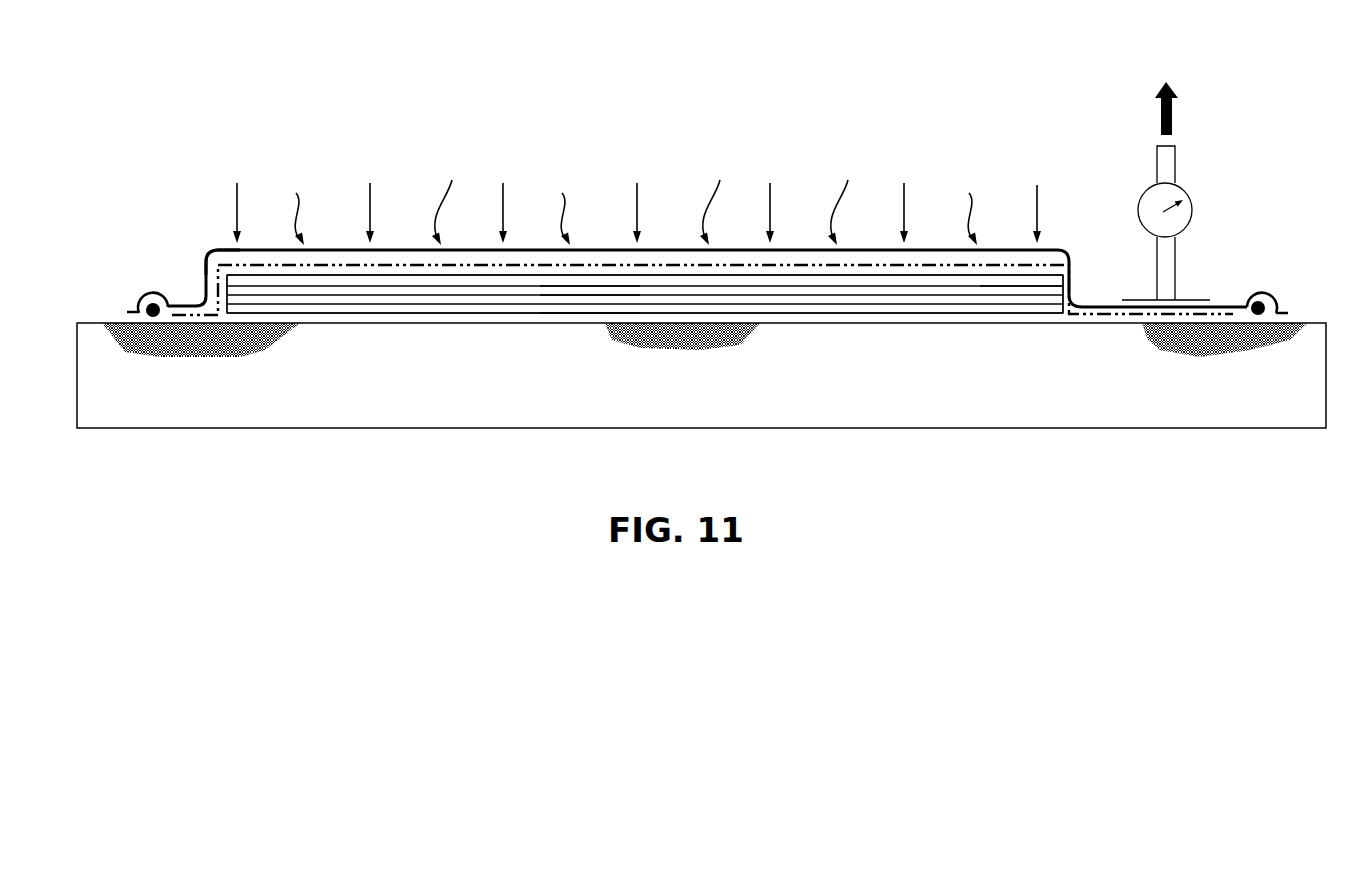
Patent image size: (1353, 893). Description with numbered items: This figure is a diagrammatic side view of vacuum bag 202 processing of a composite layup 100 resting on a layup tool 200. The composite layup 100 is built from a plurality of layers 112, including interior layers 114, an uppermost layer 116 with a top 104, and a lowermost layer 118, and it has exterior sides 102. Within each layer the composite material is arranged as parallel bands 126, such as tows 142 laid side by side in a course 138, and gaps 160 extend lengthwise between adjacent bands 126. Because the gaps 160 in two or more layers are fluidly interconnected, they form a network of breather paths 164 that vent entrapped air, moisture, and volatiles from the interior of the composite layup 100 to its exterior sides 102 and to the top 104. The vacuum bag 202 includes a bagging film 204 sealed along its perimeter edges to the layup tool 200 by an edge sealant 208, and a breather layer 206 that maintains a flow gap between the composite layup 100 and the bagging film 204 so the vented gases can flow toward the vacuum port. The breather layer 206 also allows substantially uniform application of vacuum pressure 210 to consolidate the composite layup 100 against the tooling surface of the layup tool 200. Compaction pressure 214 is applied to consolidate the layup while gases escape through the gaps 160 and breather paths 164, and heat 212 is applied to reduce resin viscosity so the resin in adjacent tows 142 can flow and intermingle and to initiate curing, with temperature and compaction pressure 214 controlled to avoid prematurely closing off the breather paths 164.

The composite layup 100 is at (386, 295).
The exterior sides 102 is at (227, 292).
The top 104 is at (527, 277).
The layers 112 is at (507, 286).
The interior layers 114 is at (589, 288).
The uppermost layer 116 is at (605, 277).
The lowermost layer 118 is at (523, 314).
The bands 126 is at (794, 313).
The course 138 is at (851, 305).
The tows 142 is at (907, 312).
The gaps 160 is at (969, 313).
The breather paths 164 is at (1033, 313).
The layup tool 200 is at (660, 410).
The vacuum bag 202 is at (200, 261).
The bagging film 204 is at (215, 250).
The breather layer 206 is at (262, 263).
The edge sealant 208 is at (150, 303).
The vacuum pressure 210 is at (1172, 122).
The heat 212 is at (638, 197).
The compaction pressure 214 is at (370, 208).